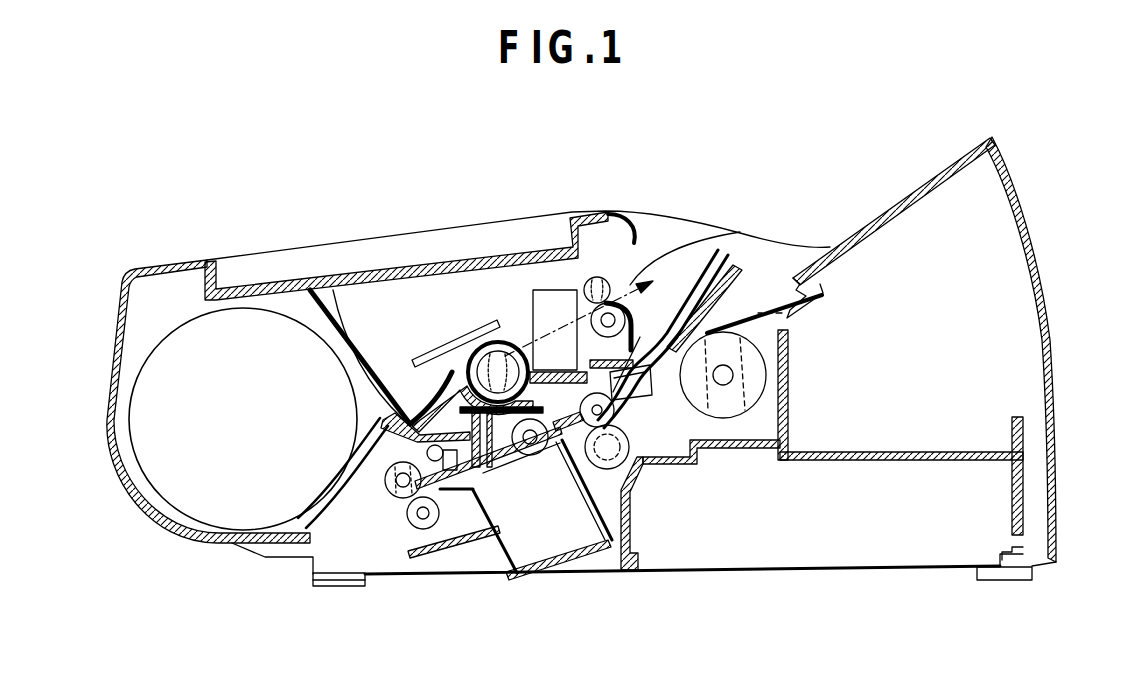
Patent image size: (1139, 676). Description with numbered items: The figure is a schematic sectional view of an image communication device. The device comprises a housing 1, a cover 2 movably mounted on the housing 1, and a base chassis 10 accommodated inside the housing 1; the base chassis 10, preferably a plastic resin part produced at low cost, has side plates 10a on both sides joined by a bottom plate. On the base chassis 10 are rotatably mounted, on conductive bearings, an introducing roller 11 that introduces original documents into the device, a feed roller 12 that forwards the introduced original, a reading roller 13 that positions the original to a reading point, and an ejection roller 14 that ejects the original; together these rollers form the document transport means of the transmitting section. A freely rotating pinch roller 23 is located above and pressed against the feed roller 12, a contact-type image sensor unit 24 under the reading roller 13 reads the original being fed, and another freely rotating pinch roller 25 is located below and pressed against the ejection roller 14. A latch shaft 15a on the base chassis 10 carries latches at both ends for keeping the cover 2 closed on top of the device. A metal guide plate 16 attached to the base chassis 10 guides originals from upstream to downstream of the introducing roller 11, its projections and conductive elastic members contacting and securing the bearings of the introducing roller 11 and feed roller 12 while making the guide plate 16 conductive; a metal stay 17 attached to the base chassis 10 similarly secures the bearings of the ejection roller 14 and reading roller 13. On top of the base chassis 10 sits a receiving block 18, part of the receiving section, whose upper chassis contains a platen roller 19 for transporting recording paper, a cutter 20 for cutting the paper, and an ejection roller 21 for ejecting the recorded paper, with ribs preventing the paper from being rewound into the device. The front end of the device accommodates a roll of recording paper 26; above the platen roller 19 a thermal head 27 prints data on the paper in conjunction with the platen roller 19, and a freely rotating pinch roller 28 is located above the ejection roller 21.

The housing 1 is at (1058, 372).
The cover 2 is at (108, 336).
The base chassis 10 is at (484, 488).
The side plates 10a is at (462, 493).
The introducing roller 11 is at (750, 333).
The feed roller 12 is at (640, 525).
The reading roller 13 is at (525, 456).
The ejection roller 14 is at (390, 500).
The latch shaft 15a is at (320, 586).
The guide plate 16 is at (830, 290).
The stay 17 is at (490, 350).
The receiving block 18 is at (435, 357).
The platen roller 19 is at (493, 348).
The cutter 20 is at (557, 300).
The ejection roller 21 is at (620, 300).
The pinch roller 23 is at (697, 293).
The contact-type image sensor unit 24 is at (550, 450).
The pinch roller 25 is at (412, 530).
The roll of recording paper 26 is at (197, 505).
The thermal head 27 is at (405, 395).
The pinch roller 28 is at (597, 277).